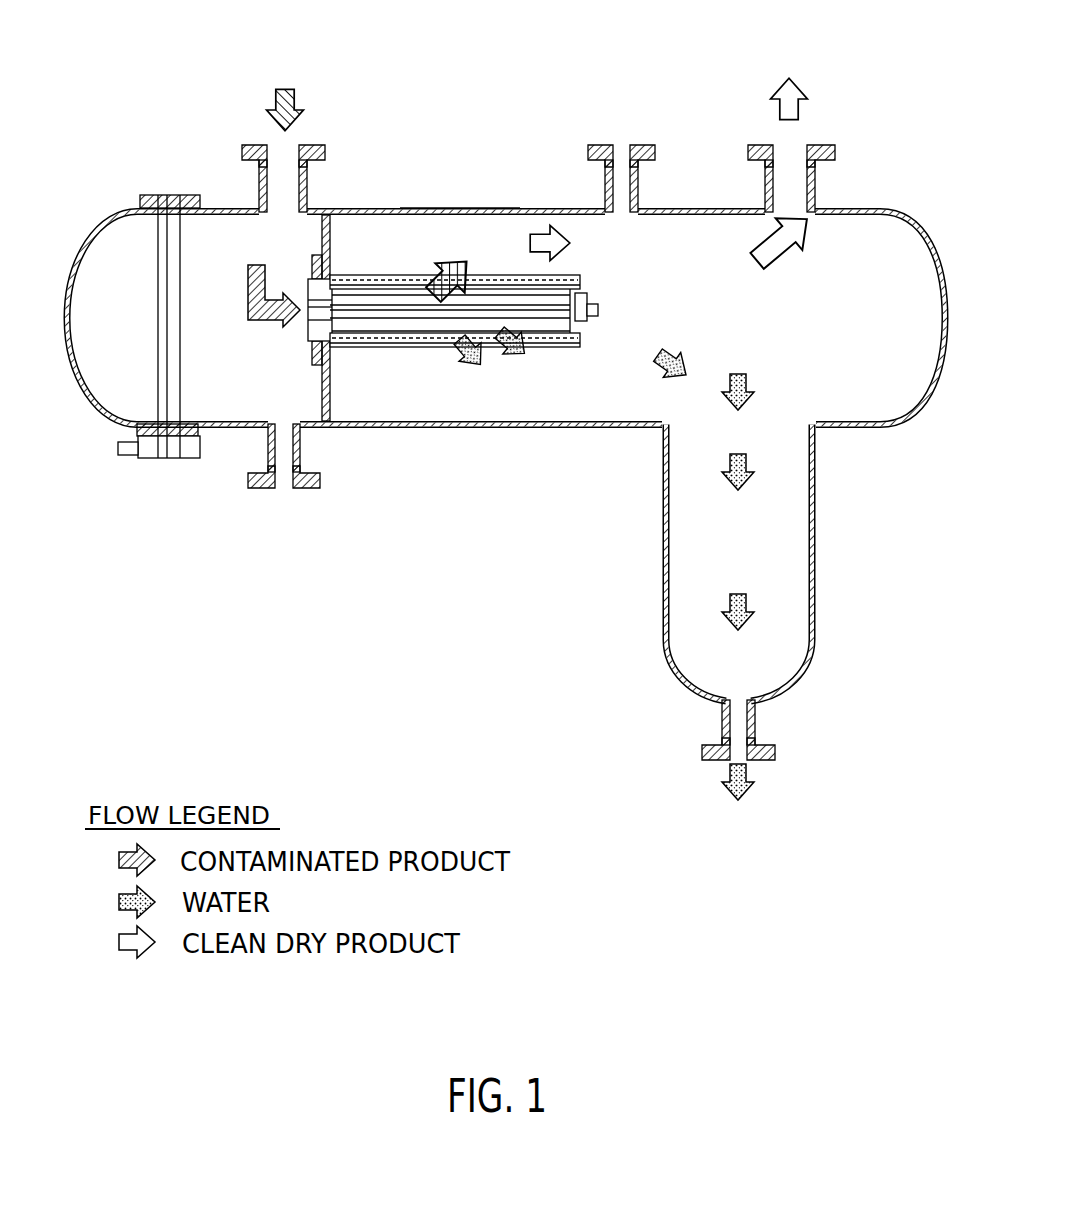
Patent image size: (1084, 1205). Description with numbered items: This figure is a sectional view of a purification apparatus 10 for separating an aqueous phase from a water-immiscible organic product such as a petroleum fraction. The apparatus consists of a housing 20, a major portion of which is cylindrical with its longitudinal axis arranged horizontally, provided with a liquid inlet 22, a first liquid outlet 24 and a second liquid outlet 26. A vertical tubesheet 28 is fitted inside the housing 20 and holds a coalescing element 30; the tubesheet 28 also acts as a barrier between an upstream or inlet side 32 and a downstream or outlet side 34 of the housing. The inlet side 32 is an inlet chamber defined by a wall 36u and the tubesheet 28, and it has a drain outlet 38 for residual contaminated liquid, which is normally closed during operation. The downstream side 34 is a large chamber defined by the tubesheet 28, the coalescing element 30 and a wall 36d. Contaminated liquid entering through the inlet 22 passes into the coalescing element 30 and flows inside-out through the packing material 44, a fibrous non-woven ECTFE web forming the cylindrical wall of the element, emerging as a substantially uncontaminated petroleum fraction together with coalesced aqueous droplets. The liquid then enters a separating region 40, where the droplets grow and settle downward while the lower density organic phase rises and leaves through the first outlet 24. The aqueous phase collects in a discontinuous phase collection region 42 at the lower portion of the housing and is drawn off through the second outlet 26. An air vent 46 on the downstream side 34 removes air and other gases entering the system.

The purification apparatus 10 is at (545, 436).
The housing 20 is at (853, 210).
The liquid inlet 22 is at (295, 147).
The first liquid outlet 24 is at (800, 145).
The second liquid outlet 26 is at (729, 830).
The vertical tubesheet 28 is at (330, 236).
The coalescing element 30 is at (565, 276).
The upstream or inlet side 32 is at (246, 369).
The downstream or outlet side 34 is at (606, 400).
The wall 36u is at (220, 207).
The wall 36d is at (455, 208).
The drain outlet 38 is at (283, 490).
The separating region 40 is at (754, 329).
The discontinuous phase collection region 42 is at (754, 560).
The packing material 44 is at (393, 345).
The air vent 46 is at (655, 152).